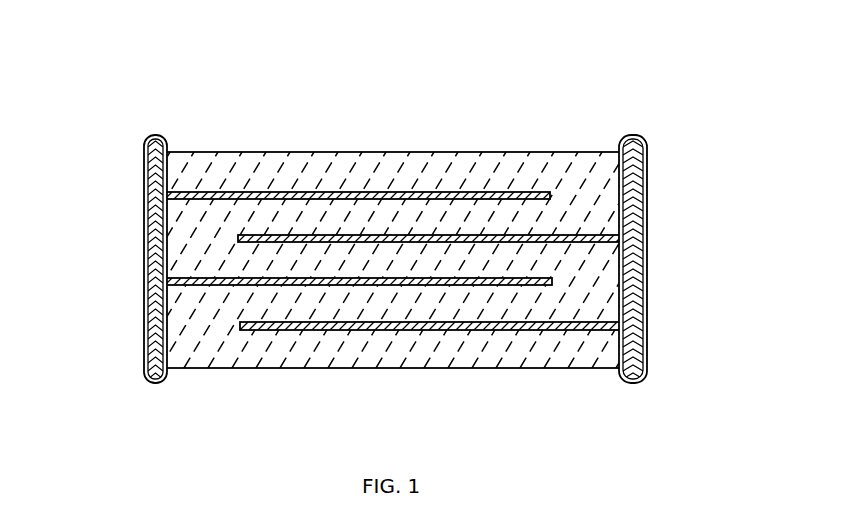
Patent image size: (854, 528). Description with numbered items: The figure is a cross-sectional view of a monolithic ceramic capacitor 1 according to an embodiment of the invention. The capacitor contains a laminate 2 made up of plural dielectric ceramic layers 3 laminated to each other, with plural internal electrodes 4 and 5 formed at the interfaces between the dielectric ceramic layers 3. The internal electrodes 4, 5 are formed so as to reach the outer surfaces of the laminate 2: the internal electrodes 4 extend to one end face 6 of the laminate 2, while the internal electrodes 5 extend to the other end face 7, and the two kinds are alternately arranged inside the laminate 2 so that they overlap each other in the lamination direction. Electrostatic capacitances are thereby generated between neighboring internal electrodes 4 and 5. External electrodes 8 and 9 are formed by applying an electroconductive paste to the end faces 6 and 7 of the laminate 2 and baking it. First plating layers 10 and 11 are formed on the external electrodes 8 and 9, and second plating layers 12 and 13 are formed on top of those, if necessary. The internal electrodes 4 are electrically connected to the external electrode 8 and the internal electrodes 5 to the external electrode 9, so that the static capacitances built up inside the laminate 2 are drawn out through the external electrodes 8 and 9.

The monolithic ceramic capacitor 1 is at (301, 21).
The laminate 2 is at (338, 371).
The dielectric ceramic layers 3 is at (425, 208).
The internal electrodes 4 is at (298, 280).
The internal electrodes 5 is at (543, 240).
The end face 6 is at (152, 255).
The end face 7 is at (640, 257).
The external electrode 8 is at (152, 190).
The external electrode 9 is at (640, 181).
The first plating layer 10 is at (152, 305).
The first plating layer 11 is at (640, 303).
The second plating layer 12 is at (150, 357).
The second plating layer 13 is at (640, 355).